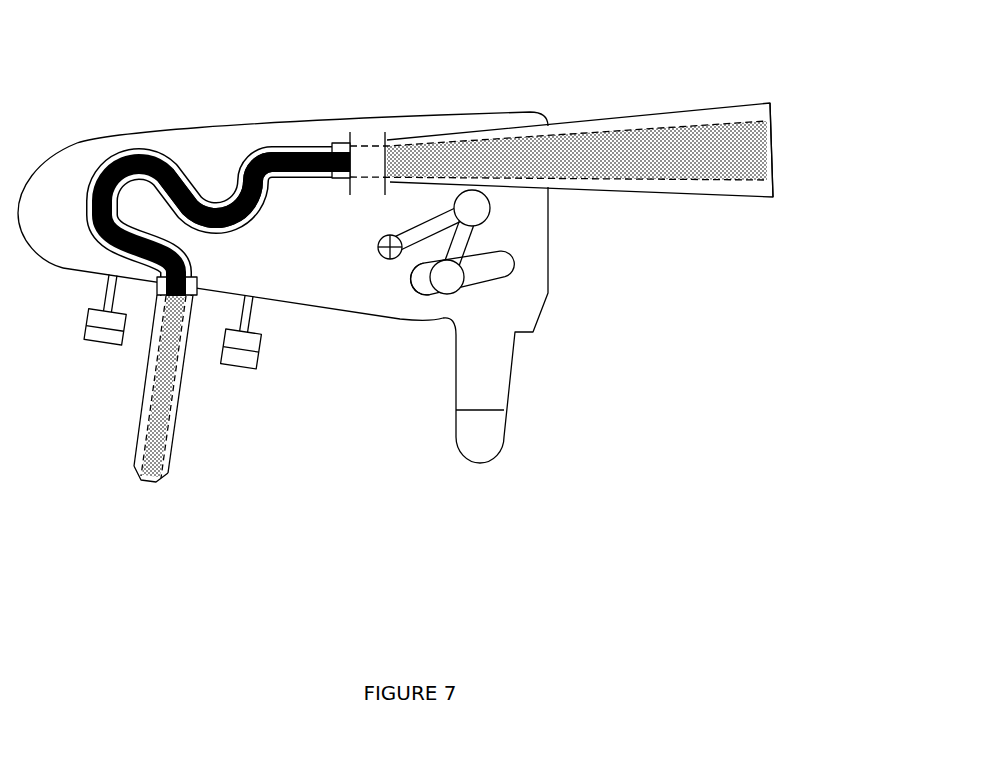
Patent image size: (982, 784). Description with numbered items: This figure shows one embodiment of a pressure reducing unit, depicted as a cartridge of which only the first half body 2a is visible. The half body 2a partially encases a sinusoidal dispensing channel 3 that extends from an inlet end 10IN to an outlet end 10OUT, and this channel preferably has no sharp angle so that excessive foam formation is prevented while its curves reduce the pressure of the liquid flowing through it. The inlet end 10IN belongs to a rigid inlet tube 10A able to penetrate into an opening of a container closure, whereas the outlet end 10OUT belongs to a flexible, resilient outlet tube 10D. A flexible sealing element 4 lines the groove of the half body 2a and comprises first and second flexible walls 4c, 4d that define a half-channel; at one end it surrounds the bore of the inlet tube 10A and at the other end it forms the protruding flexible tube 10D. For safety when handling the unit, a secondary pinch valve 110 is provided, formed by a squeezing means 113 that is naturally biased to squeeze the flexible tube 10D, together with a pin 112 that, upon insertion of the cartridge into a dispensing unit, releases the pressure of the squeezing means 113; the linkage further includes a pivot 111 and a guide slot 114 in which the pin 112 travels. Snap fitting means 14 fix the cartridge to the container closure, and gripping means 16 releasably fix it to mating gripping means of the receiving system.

The first half body 2a is at (384, 89).
The dispensing channel 3 is at (163, 183).
The sealing element 4 is at (221, 209).
The first flexible wall 4c is at (250, 170).
The second flexible wall 4d is at (307, 157).
The flexible outlet tube 10D is at (598, 127).
The outlet end 10OUT is at (773, 165).
The inlet tube 10A is at (183, 358).
The inlet end 10IN is at (165, 475).
The snap fitting means 14 is at (107, 348).
The gripping means 16 is at (510, 400).
The secondary pinch valve 110 is at (474, 305).
The pivot pin 111 is at (388, 258).
The pin 112 is at (440, 290).
The squeezing means 113 is at (489, 206).
The guide slot 114 is at (413, 288).